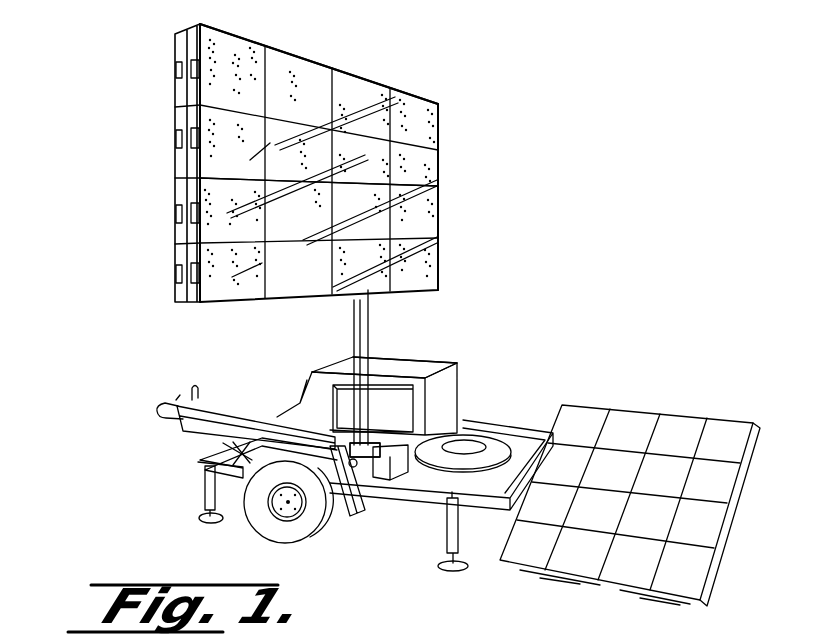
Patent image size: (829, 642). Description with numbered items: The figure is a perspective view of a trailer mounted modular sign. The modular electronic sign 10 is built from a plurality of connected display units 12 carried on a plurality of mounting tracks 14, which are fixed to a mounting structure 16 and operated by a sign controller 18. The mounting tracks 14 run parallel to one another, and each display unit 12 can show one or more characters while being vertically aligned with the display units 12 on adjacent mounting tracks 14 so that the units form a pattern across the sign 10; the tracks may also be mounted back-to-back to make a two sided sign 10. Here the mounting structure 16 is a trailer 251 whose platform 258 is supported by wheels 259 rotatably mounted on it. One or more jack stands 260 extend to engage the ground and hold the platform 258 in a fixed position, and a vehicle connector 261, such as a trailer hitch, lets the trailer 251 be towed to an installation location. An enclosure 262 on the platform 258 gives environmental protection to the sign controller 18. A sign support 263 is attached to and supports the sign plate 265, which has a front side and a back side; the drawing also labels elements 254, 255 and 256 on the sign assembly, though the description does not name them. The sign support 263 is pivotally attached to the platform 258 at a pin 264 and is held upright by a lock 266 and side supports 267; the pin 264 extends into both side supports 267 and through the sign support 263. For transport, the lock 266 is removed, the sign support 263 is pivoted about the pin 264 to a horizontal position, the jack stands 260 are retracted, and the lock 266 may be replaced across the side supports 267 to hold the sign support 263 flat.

The modular electronic sign 10 is at (288, 158).
The display unit 12 is at (270, 134).
The mounting track 14 is at (190, 52).
The mounting structure 16 is at (439, 428).
The sign controller 18 is at (342, 387).
The trailer 251 is at (537, 434).
The display frame side member 254 is at (462, 130).
The display frame cross member 255 is at (462, 202).
The display frame top member 256 is at (430, 88).
The platform 258 is at (555, 470).
The wheels 259 is at (275, 530).
The jack stand 260 is at (205, 492).
The vehicle connector 261 is at (228, 410).
The enclosure 262 is at (402, 364).
The sign support 263 is at (370, 318).
The pin 264 is at (366, 508).
The sign plate 265 is at (176, 190).
The lock 266 is at (378, 452).
The side supports 267 is at (420, 440).